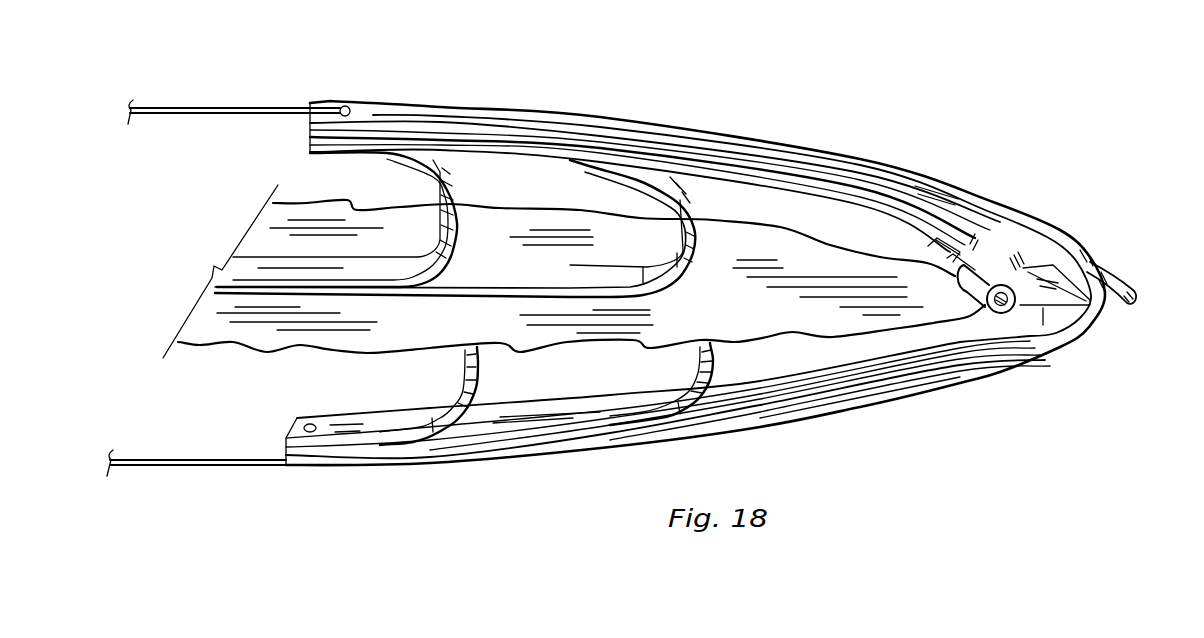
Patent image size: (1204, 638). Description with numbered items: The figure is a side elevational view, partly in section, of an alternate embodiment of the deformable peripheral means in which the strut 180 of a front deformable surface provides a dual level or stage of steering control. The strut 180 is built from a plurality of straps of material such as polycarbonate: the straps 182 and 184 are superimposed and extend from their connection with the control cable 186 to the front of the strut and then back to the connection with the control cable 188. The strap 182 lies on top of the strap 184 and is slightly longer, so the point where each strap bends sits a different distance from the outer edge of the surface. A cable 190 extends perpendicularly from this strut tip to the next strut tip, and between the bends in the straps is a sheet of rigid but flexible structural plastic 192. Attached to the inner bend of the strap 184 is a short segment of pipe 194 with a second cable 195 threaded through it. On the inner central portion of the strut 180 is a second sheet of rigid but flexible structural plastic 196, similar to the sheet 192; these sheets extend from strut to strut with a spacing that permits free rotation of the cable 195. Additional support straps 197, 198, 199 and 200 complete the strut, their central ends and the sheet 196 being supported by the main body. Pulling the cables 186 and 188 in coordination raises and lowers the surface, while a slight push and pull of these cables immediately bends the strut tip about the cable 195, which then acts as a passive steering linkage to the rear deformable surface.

The strut 180 is at (443, 460).
The strap 182 is at (1045, 235).
The strap 184 is at (907, 203).
The control cable 186 is at (262, 106).
The control cable 188 is at (143, 460).
The cable 190 is at (1117, 277).
The sheet of rigid but flexible structural plastic 192 is at (1077, 317).
The short segment of pipe 194 is at (992, 312).
The second cable 195 is at (953, 237).
The second sheet of rigid but flexible structural plastic 196 is at (837, 307).
The support strap 197 is at (590, 167).
The support strap 198 is at (685, 388).
The support strap 199 is at (433, 172).
The support strap 200 is at (458, 382).